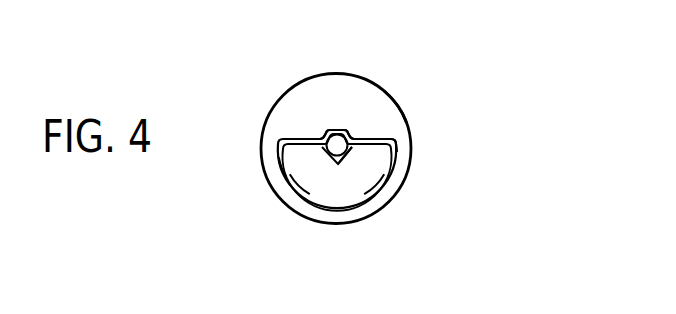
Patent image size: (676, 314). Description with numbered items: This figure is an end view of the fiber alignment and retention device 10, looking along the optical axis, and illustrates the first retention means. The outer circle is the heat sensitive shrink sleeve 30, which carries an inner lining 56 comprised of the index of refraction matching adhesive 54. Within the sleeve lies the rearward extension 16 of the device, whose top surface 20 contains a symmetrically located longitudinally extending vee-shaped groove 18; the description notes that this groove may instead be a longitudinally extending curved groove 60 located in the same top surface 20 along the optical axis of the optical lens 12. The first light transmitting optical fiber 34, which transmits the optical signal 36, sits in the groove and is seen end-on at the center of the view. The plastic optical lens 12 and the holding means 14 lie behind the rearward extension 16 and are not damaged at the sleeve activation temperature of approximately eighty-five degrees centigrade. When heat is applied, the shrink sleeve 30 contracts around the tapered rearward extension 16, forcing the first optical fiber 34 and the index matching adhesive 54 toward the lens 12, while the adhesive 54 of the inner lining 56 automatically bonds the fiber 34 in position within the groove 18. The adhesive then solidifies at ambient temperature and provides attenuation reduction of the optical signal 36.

The fiber alignment and retention device 10 is at (412, 111).
The optical lens 12 is at (338, 73).
The holding means 14 is at (316, 190).
The rearward extension 16 is at (287, 185).
The longitudinally extending vee-shaped groove 18 is at (342, 160).
The top surface 20 is at (297, 155).
The heat sensitive shrink sleeve 30 is at (400, 152).
The first light transmitting optical fiber 34 is at (338, 140).
The optical signal 36 is at (336, 140).
The index of refraction matching adhesive 54 is at (365, 187).
The inner lining 56 is at (280, 138).
The longitudinally extending curved groove 60 is at (345, 157).